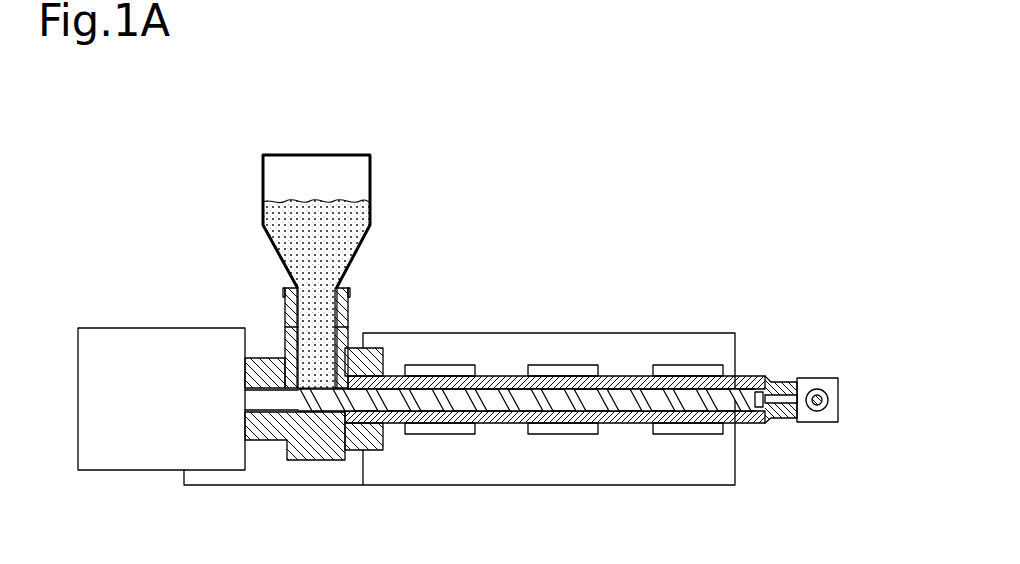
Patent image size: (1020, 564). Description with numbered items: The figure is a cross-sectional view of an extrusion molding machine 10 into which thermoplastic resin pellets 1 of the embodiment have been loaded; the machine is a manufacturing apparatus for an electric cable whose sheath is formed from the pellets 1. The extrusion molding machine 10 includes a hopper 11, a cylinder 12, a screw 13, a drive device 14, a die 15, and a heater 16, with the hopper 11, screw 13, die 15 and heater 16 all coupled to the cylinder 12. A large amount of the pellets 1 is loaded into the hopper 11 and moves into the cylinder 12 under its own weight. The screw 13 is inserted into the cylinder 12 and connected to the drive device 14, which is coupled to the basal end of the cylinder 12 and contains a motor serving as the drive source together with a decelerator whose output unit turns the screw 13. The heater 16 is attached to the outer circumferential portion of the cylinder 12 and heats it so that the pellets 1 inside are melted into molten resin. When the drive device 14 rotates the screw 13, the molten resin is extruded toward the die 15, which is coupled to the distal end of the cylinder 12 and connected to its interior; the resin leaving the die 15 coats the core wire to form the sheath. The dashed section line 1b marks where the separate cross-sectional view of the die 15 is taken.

The pellets 1 is at (321, 183).
The extrusion molding machine 10 is at (166, 151).
The hopper 11 is at (372, 168).
The cylinder 12 is at (377, 452).
The screw 13 is at (562, 398).
The drive device 14 is at (155, 328).
The die 15 is at (820, 378).
The heater 16 is at (465, 367).
The line 1b- 1b is at (657, 398).